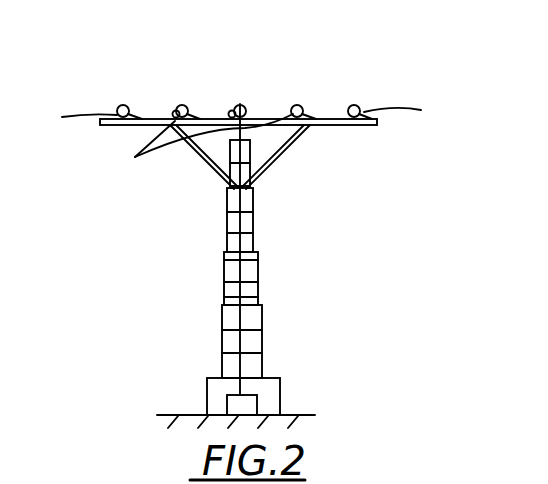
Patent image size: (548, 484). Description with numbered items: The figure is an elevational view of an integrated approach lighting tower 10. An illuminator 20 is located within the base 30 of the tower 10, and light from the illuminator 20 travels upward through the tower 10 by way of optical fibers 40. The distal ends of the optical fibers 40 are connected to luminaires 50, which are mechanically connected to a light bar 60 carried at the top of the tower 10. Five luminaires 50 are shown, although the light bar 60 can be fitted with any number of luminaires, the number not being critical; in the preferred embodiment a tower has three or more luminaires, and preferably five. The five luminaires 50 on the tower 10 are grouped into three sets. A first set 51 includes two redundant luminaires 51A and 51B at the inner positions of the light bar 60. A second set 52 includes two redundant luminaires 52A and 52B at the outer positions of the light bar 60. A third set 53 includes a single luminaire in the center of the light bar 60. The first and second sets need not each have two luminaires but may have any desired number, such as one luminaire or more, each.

The approach lighting tower 10 is at (256, 232).
The illuminator 20 is at (258, 400).
The base 30 is at (207, 383).
The optical fibers 40 is at (243, 297).
The luminaires 50 is at (122, 105).
The first set 51 is at (195, 143).
The redundant luminaire 51A is at (187, 107).
The redundant luminaire 51B is at (300, 105).
The second set 52 is at (235, 113).
The redundant luminaire 52A is at (118, 112).
The redundant luminaire 52B is at (361, 103).
The third set 53 is at (244, 103).
The light bar 60 is at (377, 125).